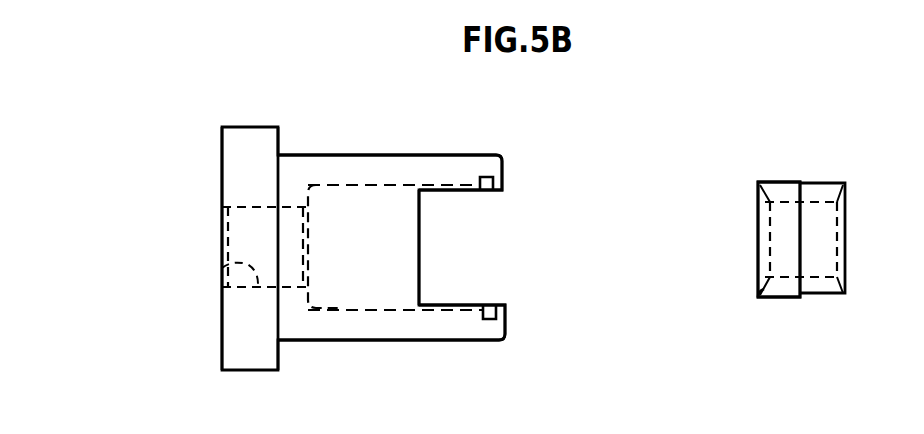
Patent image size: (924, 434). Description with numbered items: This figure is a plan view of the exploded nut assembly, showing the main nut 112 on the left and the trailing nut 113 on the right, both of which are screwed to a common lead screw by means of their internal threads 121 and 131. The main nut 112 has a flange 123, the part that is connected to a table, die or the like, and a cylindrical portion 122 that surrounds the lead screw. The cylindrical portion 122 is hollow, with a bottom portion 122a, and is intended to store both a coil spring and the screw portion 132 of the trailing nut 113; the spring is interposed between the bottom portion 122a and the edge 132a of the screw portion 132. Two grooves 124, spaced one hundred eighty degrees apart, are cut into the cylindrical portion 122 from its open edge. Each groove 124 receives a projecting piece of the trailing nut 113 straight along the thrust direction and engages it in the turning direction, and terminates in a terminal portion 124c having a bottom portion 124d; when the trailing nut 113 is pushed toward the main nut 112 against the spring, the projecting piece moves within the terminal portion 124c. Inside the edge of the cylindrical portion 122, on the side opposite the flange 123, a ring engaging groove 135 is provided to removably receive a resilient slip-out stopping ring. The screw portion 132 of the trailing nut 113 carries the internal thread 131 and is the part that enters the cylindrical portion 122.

The main nut 112 is at (279, 120).
The trailing nut 113 is at (759, 182).
The internal thread 121 is at (222, 268).
The cylindrical portion 122 is at (400, 155).
The bottom portion 122a is at (322, 198).
The flange 123 is at (279, 131).
The groove 124 is at (468, 328).
The terminal portion 124c is at (452, 304).
The bottom portion 124d is at (421, 260).
The ring engaging groove 135 is at (495, 191).
The internal thread 131 is at (755, 263).
The screw portion 132 is at (776, 289).
The edge 132a is at (757, 293).